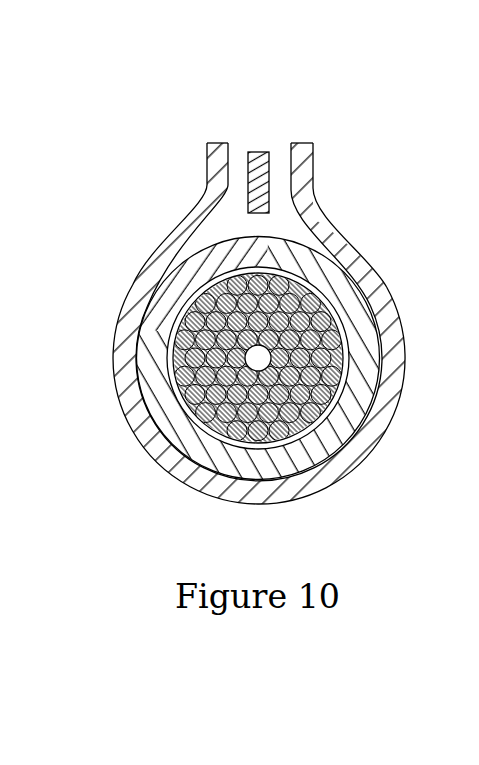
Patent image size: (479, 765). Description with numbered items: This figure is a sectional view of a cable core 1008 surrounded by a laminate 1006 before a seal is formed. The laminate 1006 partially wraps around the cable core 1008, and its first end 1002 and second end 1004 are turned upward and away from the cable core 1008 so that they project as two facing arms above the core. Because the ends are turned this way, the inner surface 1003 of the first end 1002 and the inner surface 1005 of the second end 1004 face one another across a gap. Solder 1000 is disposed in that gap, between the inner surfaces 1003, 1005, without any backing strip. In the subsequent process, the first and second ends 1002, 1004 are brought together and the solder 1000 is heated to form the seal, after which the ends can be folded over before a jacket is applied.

The solder 1000 is at (260, 156).
The first end 1002 is at (337, 186).
The inner surface 1003 is at (280, 160).
The second end 1004 is at (180, 169).
The inner surface 1005 is at (241, 158).
The laminate 1006 is at (150, 442).
The cable core 1008 is at (330, 440).